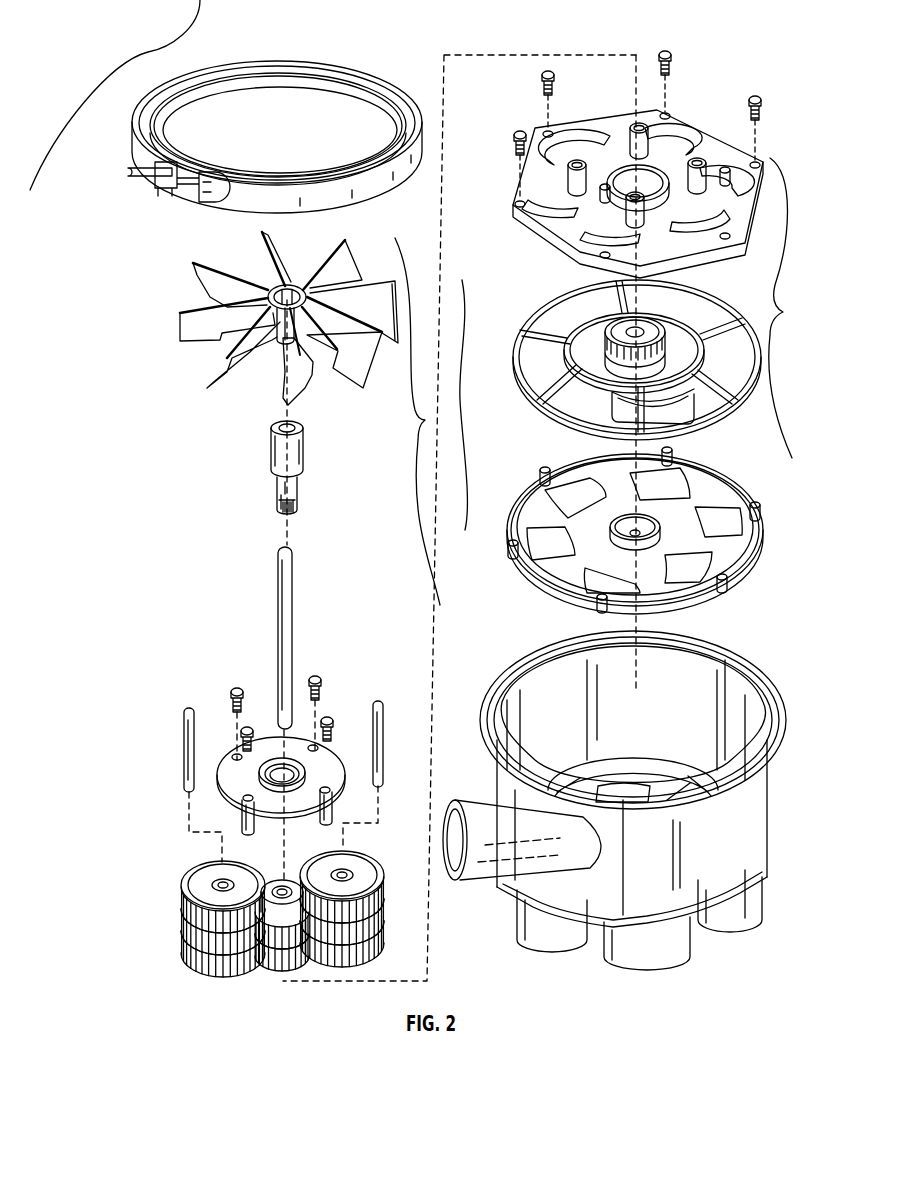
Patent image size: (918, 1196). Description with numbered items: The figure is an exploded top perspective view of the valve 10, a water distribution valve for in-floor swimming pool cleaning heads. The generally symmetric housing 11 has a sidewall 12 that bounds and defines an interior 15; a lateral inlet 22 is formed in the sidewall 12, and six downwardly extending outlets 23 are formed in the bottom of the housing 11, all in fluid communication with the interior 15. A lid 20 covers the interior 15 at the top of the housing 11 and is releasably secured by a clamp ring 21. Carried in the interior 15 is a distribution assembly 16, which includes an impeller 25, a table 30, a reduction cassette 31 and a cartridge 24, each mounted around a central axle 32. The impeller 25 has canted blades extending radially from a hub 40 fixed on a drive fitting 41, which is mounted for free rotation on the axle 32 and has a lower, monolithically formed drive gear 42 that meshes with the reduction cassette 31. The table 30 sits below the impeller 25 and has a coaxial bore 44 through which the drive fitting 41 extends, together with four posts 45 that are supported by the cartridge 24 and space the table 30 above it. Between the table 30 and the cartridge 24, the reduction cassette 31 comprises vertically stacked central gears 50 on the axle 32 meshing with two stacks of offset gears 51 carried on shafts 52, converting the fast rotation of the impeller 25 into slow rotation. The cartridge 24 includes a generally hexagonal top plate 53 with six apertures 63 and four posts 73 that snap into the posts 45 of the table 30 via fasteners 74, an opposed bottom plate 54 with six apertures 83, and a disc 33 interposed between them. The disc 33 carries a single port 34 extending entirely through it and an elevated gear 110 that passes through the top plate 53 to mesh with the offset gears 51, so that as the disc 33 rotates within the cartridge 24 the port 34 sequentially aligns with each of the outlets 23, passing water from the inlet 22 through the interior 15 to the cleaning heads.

The valve 10 is at (115, 95).
The housing 11 is at (629, 818).
The sidewall 12 is at (753, 820).
The interior 15 is at (670, 706).
The distribution assembly 16 is at (431, 421).
The lid 20 is at (335, 102).
The clamp ring 21 is at (225, 207).
The lateral inlet 22 is at (480, 882).
The outlets 23 is at (585, 962).
The cartridge 24 is at (795, 308).
The impeller 25 is at (244, 318).
The table 30 is at (257, 755).
The reduction cassette 31 is at (247, 934).
The central axle 32 is at (296, 606).
The disc 33 is at (619, 362).
The port 34 is at (664, 413).
The hub 40 is at (276, 284).
The drive fitting 41 is at (305, 457).
The drive gear 42 is at (303, 500).
The coaxial bore 44 is at (280, 770).
The posts 45 is at (339, 816).
The central gears 50 is at (294, 967).
The offset gears 51 is at (366, 972).
The shafts 52 is at (386, 720).
The top plate 53 is at (614, 164).
The bottom plate 54 is at (612, 530).
The apertures 63 is at (577, 152).
The posts 73 is at (712, 165).
The fasteners 74 is at (320, 692).
The apertures 83 is at (722, 514).
The gear 110 is at (656, 330).